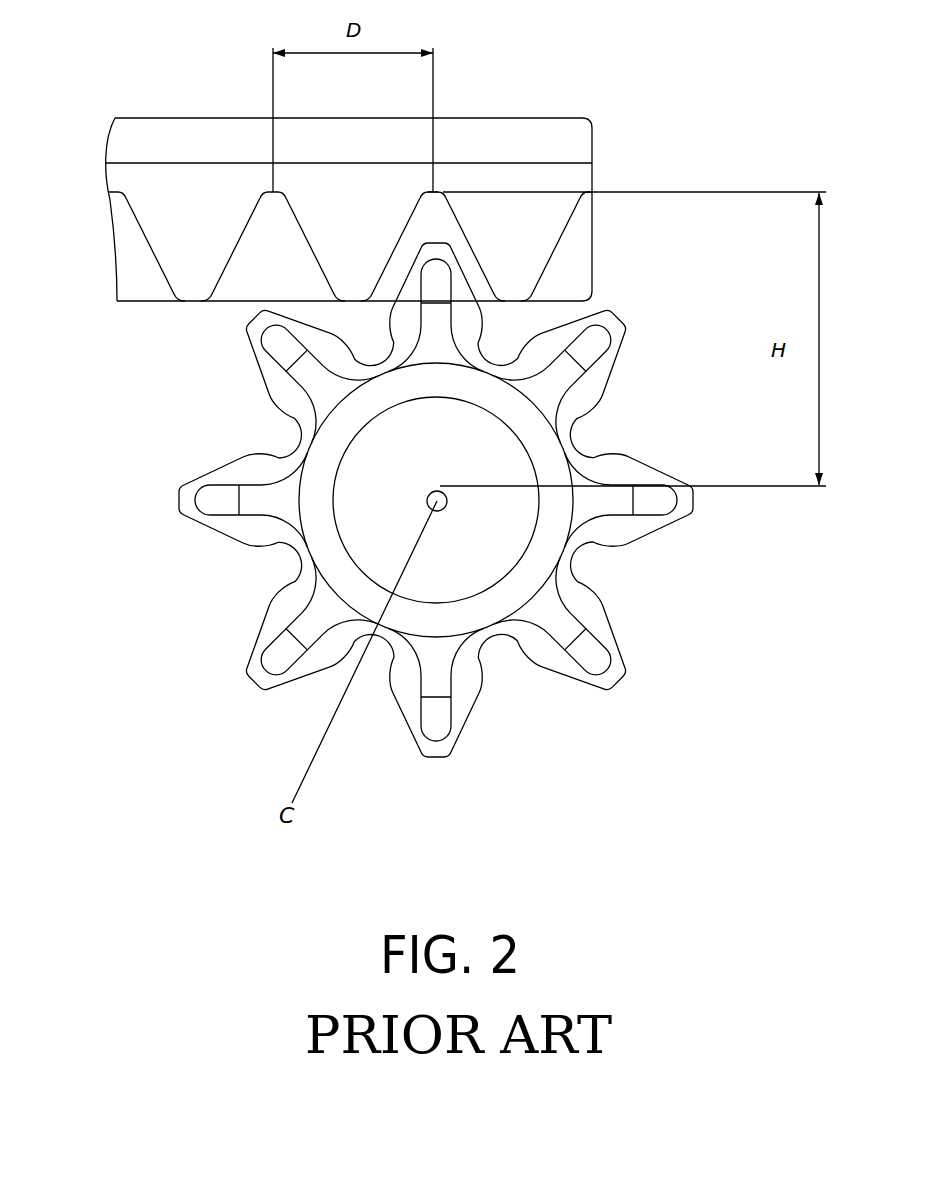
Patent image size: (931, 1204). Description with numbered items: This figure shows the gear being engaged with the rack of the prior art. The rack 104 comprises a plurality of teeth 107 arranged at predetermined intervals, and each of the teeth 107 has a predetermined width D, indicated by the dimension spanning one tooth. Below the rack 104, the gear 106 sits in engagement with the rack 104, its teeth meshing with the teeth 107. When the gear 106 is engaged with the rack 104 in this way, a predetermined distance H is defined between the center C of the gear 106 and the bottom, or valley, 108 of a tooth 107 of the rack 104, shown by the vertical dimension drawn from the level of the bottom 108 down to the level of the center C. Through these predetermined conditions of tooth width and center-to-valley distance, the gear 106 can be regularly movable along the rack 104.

The rack 104 is at (112, 117).
The gear 106 is at (510, 703).
The teeth 107 is at (187, 212).
The bottom of a tooth 108 is at (435, 190).